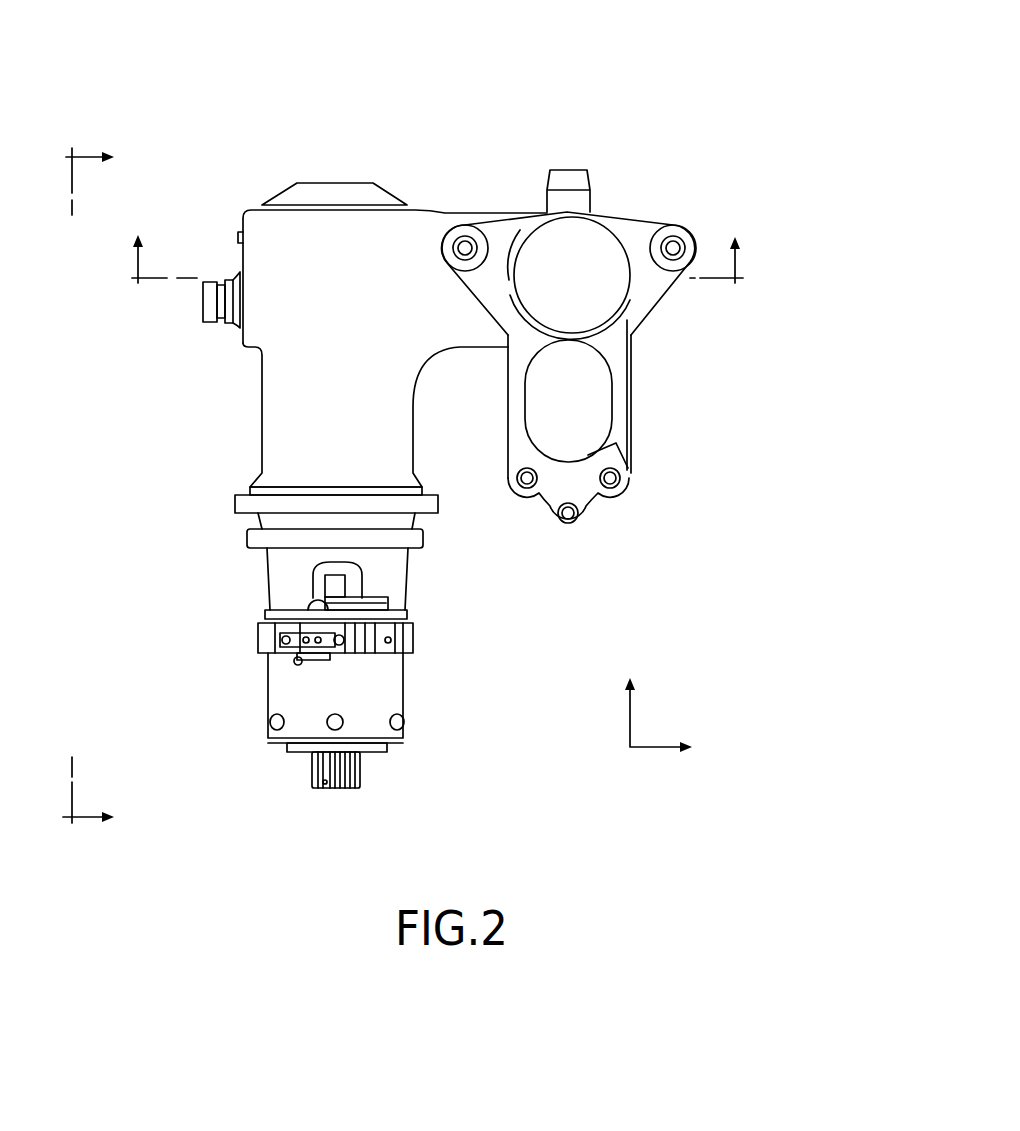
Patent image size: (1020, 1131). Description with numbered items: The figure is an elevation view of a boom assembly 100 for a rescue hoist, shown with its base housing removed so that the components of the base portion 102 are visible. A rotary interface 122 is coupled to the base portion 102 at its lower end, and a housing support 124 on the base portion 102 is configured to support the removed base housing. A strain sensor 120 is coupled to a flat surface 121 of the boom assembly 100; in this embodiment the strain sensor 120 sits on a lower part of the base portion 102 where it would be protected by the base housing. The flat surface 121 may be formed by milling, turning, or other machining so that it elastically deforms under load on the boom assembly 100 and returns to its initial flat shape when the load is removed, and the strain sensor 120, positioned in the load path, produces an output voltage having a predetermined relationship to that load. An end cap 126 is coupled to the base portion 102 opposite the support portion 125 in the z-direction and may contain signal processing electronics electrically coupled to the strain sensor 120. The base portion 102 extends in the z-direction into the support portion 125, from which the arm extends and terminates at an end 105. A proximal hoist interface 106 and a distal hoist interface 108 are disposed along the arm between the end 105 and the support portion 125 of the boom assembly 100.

The boom assembly 100 is at (635, 83).
The base portion 102 is at (287, 412).
The end 105 is at (598, 257).
The proximal hoist interface 106 is at (622, 420).
The distal hoist interface 108 is at (570, 488).
The strain sensor 120 is at (332, 583).
The flat surface 121 is at (320, 570).
The rotary interface 122 is at (355, 768).
The housing support 124 is at (415, 538).
The support portion 125 is at (492, 217).
The end cap 126 is at (242, 252).